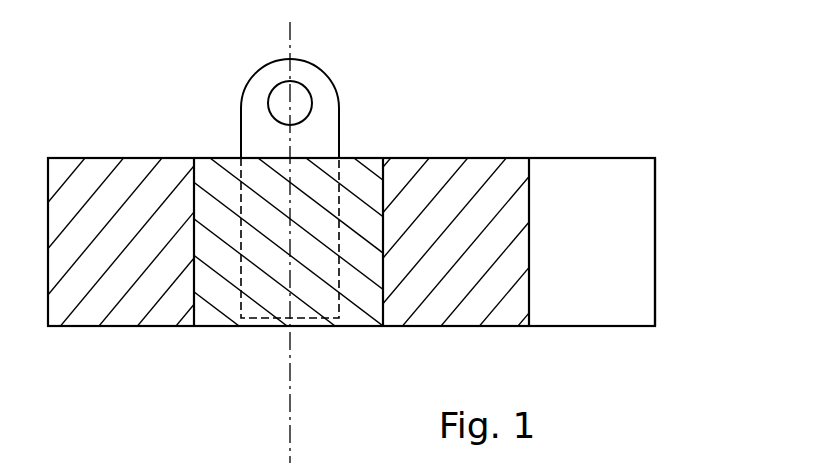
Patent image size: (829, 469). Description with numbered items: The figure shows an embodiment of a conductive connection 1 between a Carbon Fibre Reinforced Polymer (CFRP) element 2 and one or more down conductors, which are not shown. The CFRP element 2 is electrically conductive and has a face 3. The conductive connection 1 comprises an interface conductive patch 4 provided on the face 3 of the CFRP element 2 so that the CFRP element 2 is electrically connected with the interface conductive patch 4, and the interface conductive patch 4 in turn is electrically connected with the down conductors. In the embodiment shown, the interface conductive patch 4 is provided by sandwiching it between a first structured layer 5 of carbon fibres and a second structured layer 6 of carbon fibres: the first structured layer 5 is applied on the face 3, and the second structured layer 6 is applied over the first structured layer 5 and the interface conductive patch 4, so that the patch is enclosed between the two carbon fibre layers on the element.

The conductive connection 1 is at (108, 123).
The Carbon Fibre Reinforced Polymer (CFRP) element 2 is at (587, 182).
The face 3 is at (595, 272).
The interface conductive patch 4 is at (327, 132).
The first structured layer of carbon fibres 5 is at (447, 172).
The second structured layer of carbon fibres 6 is at (215, 183).